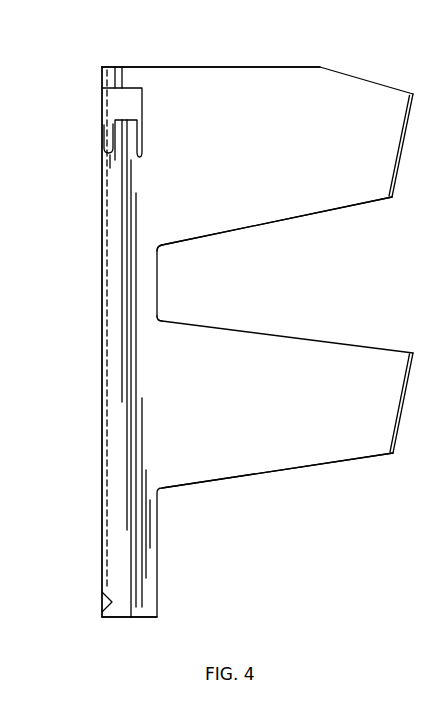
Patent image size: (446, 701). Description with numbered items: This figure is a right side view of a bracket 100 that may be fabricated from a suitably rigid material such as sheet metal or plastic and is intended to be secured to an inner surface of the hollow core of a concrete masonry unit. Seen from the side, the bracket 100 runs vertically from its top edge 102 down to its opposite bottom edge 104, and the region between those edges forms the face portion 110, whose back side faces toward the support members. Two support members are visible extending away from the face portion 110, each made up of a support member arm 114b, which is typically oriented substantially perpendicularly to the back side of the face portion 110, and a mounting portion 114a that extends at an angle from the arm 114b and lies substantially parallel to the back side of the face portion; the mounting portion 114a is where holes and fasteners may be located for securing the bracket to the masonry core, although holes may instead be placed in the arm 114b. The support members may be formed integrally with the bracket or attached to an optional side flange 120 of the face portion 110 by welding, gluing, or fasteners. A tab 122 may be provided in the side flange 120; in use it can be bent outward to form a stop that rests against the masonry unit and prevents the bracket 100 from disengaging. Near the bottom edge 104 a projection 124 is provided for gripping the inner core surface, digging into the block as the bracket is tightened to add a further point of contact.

The bracket 100 is at (291, 59).
The top edge 102 is at (133, 66).
The bottom edge 104 is at (122, 619).
The face portion 110 is at (102, 385).
The mounting portion 114a is at (392, 200).
The support member arm 114b is at (250, 212).
The side flange 120 is at (148, 304).
The tab 122 is at (118, 128).
The projection 124 is at (102, 617).